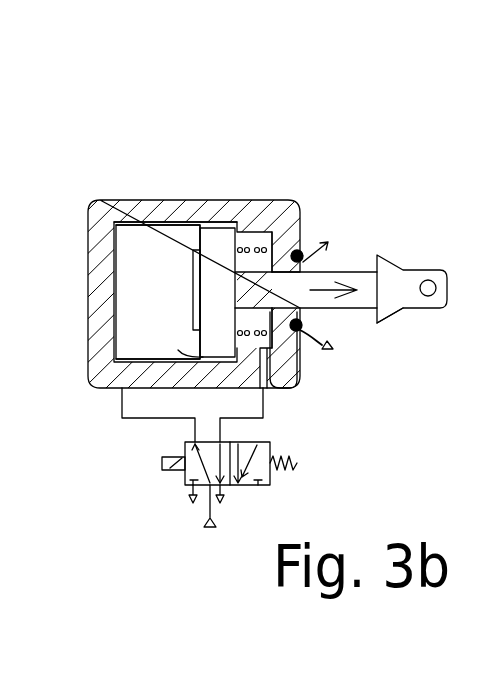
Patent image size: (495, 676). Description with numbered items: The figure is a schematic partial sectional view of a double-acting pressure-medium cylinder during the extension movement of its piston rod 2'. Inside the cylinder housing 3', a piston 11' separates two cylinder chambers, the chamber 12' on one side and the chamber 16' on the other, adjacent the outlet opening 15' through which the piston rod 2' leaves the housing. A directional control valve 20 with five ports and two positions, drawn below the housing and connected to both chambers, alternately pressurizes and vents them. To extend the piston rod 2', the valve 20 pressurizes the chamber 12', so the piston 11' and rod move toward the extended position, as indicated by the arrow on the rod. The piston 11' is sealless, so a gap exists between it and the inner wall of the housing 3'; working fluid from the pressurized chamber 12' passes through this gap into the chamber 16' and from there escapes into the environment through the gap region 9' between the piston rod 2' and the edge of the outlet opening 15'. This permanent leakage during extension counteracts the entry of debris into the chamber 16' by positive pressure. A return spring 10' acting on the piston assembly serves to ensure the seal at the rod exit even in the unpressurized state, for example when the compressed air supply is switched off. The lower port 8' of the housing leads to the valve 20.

The piston rod 2' is at (143, 382).
The cylinder housing 3' is at (236, 279).
The lower pressure port 8' is at (325, 410).
The gap region 9' is at (302, 190).
The return spring 10' is at (221, 207).
The piston 11' is at (153, 230).
The cylinder chamber 12' is at (112, 292).
The outlet opening 15' is at (331, 205).
The cylinder chamber 16' is at (267, 193).
The 5/2 directional control valve 20 is at (185, 480).